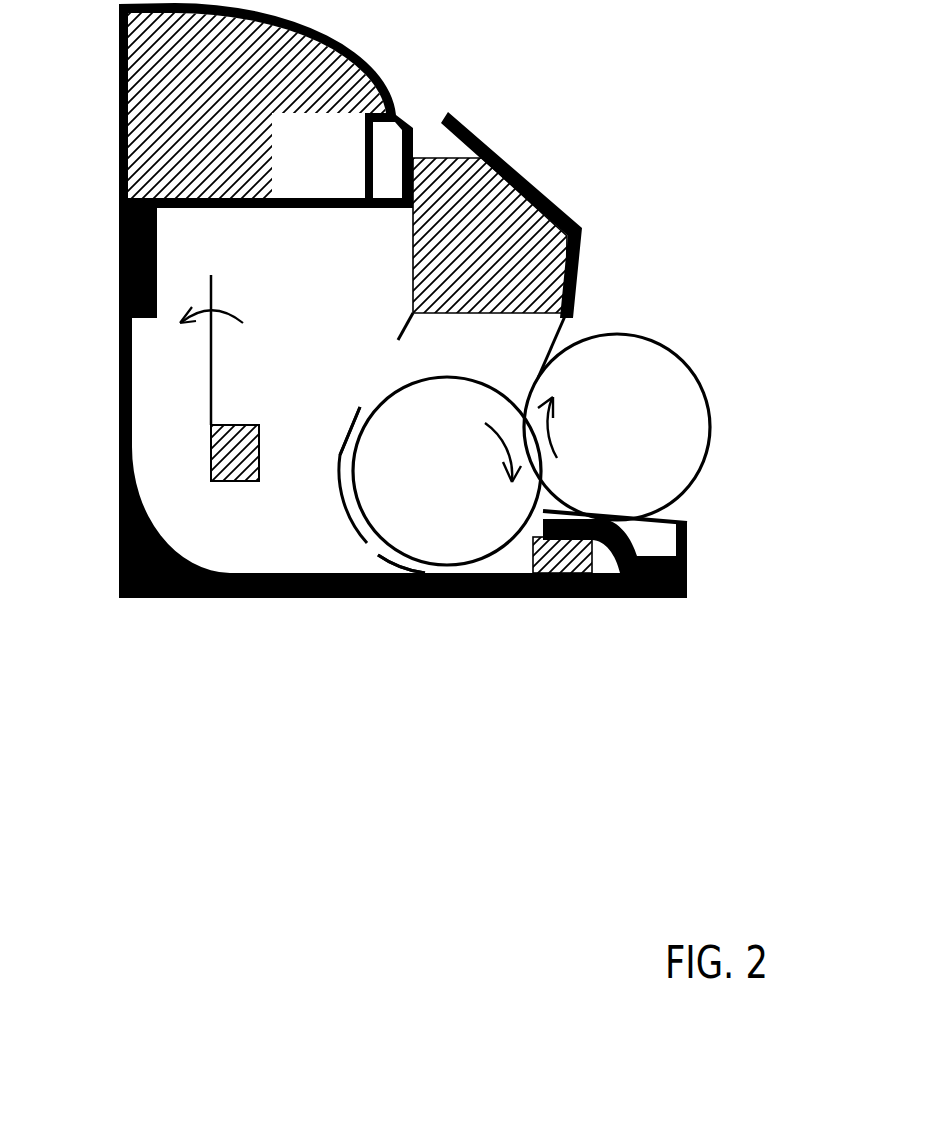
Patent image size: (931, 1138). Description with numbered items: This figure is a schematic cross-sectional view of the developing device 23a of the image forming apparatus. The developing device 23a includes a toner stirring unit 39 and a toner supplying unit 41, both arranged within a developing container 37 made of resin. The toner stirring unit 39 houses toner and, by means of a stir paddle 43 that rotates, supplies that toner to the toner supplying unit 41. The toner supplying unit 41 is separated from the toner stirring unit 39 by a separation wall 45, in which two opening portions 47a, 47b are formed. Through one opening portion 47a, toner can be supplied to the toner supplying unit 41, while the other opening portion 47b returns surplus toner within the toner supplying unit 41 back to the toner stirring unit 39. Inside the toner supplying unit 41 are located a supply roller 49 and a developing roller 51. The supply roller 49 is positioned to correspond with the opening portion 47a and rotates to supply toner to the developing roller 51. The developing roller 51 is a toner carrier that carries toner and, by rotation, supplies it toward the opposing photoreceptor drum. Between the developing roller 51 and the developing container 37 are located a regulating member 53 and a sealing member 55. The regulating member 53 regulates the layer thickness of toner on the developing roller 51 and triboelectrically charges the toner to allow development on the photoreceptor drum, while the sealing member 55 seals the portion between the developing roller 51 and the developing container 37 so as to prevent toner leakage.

The developing device 23a is at (518, 88).
The developing container 37 is at (119, 290).
The toner stirring unit 39 is at (162, 396).
The toner supplying unit 41 is at (433, 350).
The stir paddle 43 is at (210, 390).
The separation wall 45 is at (355, 420).
The opening portion 47a is at (375, 548).
The opening portion 47b is at (375, 378).
The supply roller 49 is at (465, 553).
The developing roller 51 is at (710, 428).
The regulating member 53 is at (555, 333).
The sealing member 55 is at (686, 518).